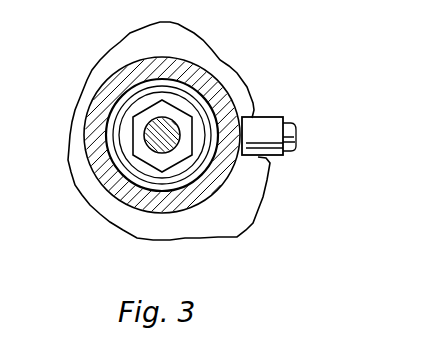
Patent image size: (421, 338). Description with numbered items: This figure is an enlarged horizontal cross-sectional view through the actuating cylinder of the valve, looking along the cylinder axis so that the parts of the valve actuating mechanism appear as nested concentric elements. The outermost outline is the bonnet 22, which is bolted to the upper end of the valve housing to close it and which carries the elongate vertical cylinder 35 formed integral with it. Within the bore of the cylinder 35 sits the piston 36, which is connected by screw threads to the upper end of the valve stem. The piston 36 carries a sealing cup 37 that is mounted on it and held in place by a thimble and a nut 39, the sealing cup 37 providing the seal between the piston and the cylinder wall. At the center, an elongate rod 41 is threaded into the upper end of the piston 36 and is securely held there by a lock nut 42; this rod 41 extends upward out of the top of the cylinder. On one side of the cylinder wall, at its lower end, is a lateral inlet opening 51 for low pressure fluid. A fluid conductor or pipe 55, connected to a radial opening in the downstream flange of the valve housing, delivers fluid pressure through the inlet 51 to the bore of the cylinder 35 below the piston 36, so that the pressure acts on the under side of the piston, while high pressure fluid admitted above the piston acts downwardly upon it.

The bonnet 22 is at (243, 82).
The cylinder 35 is at (167, 63).
The piston 36 is at (213, 197).
The sealing cup 37 is at (225, 168).
The nut 39 is at (117, 142).
The rod 41 is at (115, 187).
The lock nut 42 is at (137, 119).
The low pressure inlet opening 51 is at (263, 130).
The pipe 55 is at (294, 148).